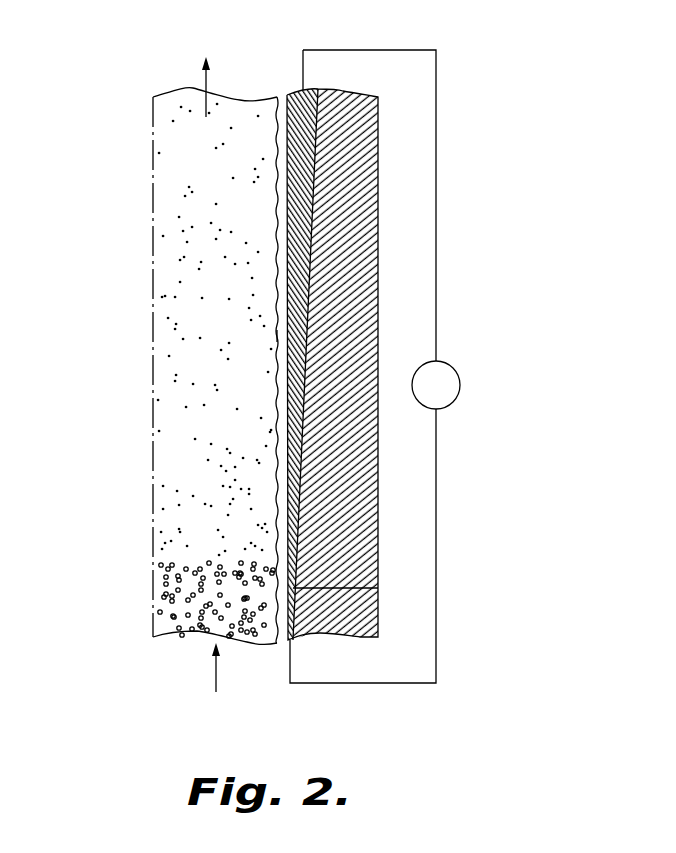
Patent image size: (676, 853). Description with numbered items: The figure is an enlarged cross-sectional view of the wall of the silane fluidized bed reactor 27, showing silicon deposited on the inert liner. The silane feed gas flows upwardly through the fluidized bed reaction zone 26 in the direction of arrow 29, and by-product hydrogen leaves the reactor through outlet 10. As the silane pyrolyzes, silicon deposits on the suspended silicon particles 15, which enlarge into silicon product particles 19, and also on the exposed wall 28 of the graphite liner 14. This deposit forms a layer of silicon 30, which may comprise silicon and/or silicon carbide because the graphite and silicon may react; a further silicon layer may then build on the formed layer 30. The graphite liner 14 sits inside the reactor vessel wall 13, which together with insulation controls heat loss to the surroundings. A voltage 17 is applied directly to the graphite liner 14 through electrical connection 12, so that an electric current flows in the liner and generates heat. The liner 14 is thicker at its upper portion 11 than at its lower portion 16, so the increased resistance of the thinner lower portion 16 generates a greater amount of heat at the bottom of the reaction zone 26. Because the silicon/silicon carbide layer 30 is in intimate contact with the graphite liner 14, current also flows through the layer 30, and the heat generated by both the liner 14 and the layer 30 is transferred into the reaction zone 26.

The outlet 10 is at (163, 97).
The top region of the graphite liner 11 is at (303, 88).
The electrical connection 12 is at (401, 50).
The reactor vessel wall 13 is at (378, 245).
The graphite liner 14 is at (318, 338).
The silicon particles 15 is at (170, 138).
The bottom region of the graphite liner 16 is at (378, 588).
The voltage 17 is at (457, 364).
The silicon product particles 19 is at (172, 497).
The fluidized bed reaction zone 26 is at (173, 250).
The fluidized bed reactor 27 is at (457, 148).
The exposed wall of the graphite liner 28 is at (287, 336).
The arrow indicating flow direction 29 is at (216, 683).
The silicon/silicon carbide layer 30 is at (280, 97).